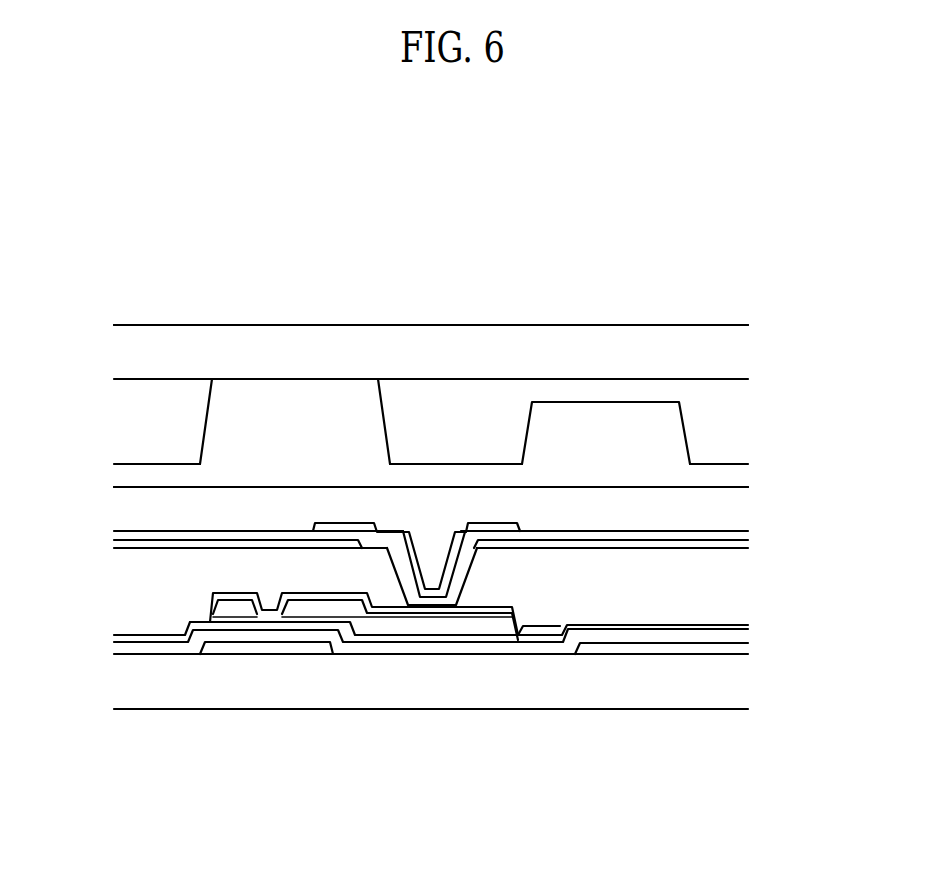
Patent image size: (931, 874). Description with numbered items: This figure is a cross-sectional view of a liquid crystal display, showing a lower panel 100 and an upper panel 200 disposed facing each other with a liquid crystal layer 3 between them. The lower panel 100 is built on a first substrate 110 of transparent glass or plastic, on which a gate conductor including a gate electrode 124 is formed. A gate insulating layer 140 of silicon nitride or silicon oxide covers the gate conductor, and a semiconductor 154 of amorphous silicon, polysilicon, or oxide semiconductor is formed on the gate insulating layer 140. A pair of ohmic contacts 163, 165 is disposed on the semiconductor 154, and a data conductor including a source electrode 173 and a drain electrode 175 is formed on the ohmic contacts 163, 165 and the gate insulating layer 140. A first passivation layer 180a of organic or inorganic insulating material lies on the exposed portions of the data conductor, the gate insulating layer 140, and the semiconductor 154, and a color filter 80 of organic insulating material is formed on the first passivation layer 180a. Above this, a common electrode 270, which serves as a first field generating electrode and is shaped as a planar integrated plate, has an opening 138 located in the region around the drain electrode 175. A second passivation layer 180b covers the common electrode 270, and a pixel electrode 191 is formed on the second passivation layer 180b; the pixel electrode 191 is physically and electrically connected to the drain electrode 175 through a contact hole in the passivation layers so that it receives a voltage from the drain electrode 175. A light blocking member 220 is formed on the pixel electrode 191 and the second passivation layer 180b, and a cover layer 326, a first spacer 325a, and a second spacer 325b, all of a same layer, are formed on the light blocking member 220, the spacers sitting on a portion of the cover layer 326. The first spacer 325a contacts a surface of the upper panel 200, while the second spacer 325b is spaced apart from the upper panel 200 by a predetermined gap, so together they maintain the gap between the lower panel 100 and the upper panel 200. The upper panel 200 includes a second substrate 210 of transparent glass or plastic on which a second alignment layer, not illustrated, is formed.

The upper panel 200 is at (757, 325).
The second substrate 210 is at (658, 345).
The liquid crystal layer 3 is at (757, 381).
The first spacer 325a is at (287, 420).
The second spacer 325b is at (616, 428).
The cover layer 326 is at (153, 477).
The lower panel 100 is at (757, 489).
The light blocking member 220 is at (580, 507).
The first substrate 110 is at (723, 690).
The gate electrode 124 is at (305, 648).
The gate insulating layer 140 is at (143, 648).
The semiconductor 154 is at (377, 635).
The ohmic contact 163 is at (242, 615).
The ohmic contact 165 is at (415, 628).
The source electrode 173 is at (225, 607).
The drain electrode 175 is at (458, 622).
The first passivation layer 180a is at (530, 640).
The color filter 80 is at (597, 595).
The common electrode 270 is at (168, 545).
The second passivation layer 180b is at (227, 535).
The opening 138 is at (378, 530).
The pixel electrode 191 is at (503, 523).